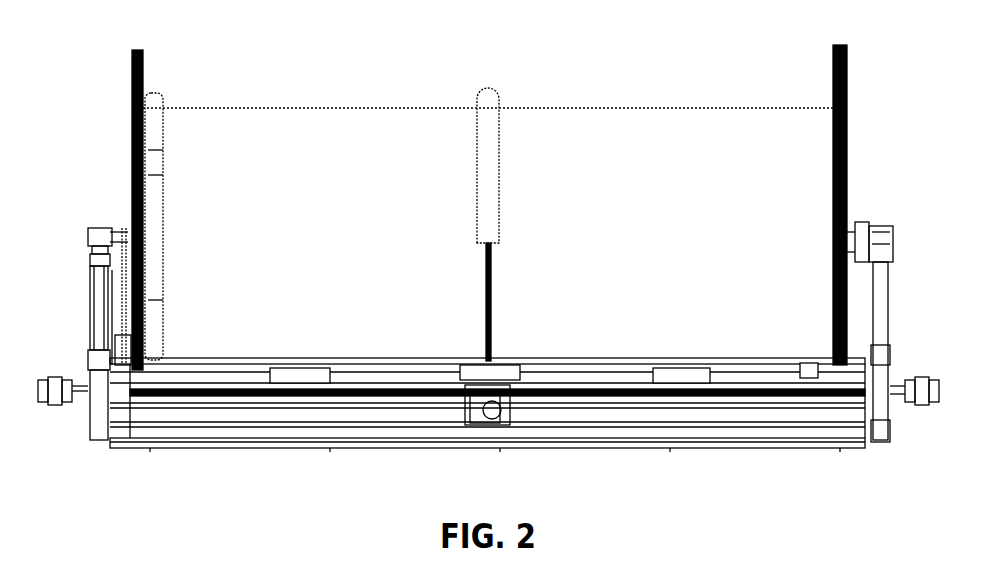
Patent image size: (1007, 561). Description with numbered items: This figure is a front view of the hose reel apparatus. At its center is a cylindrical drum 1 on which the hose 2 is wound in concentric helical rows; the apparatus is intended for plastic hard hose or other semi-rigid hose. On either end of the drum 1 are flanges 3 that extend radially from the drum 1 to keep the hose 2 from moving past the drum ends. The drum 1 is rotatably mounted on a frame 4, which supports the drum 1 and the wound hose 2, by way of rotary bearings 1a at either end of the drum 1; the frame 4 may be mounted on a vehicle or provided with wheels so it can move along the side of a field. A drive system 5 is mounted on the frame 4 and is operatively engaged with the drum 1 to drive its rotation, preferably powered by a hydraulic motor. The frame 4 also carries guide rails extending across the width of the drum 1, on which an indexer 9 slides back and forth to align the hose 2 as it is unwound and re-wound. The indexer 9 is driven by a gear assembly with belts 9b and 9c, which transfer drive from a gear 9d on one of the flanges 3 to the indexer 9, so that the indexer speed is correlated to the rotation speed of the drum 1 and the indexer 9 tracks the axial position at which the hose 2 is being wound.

The cylindrical drum 1 is at (730, 105).
The rotary bearings 1a is at (98, 228).
The hose 2 is at (491, 88).
The flanges 3 is at (143, 62).
The frame 4 is at (683, 440).
The drive system 5 is at (63, 420).
The indexer 9 is at (458, 415).
The belt 9b is at (190, 388).
The belt 9c is at (122, 303).
The gear 9d is at (121, 228).